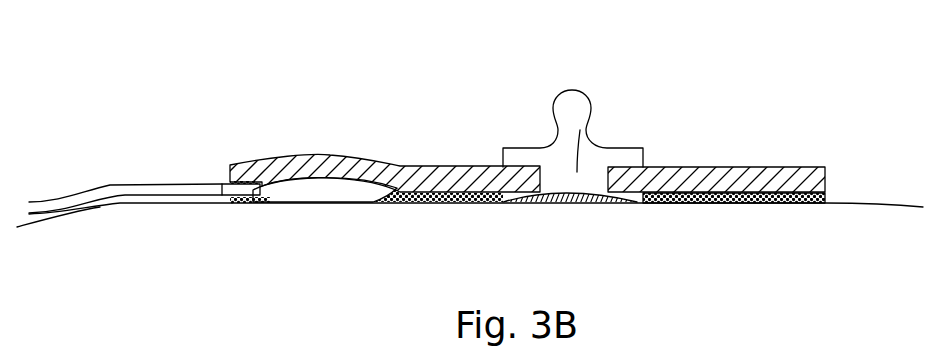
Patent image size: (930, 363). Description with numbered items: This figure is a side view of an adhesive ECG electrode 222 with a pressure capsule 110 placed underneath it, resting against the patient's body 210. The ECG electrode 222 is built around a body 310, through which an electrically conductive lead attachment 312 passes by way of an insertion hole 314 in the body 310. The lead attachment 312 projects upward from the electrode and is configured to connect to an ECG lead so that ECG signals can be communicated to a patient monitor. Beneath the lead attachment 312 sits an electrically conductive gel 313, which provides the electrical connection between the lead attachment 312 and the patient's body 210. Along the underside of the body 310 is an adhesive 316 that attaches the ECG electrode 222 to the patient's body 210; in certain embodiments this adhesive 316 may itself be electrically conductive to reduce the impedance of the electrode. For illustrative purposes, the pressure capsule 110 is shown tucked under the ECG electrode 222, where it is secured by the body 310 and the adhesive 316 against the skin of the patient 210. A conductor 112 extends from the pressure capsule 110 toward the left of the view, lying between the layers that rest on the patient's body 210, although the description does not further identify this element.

The pressure capsule 110 is at (322, 191).
The flexible conductor 112 is at (153, 181).
The patient's body 210 is at (133, 203).
The adhesive ECG electrode 222 is at (265, 94).
The body 310 is at (430, 166).
The electrically conductive lead attachment 312 is at (573, 90).
The electrically conductive gel 313 is at (558, 203).
The insertion hole 314 is at (580, 130).
The adhesive 316 is at (705, 203).